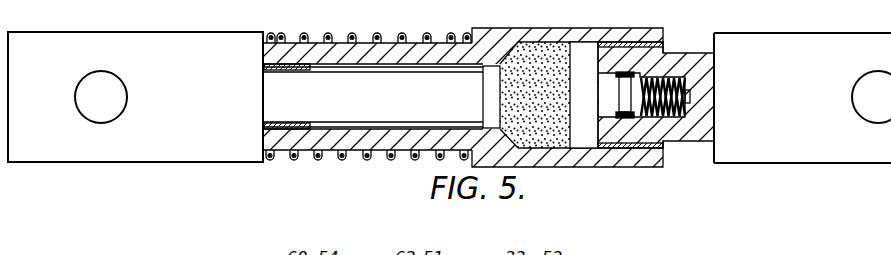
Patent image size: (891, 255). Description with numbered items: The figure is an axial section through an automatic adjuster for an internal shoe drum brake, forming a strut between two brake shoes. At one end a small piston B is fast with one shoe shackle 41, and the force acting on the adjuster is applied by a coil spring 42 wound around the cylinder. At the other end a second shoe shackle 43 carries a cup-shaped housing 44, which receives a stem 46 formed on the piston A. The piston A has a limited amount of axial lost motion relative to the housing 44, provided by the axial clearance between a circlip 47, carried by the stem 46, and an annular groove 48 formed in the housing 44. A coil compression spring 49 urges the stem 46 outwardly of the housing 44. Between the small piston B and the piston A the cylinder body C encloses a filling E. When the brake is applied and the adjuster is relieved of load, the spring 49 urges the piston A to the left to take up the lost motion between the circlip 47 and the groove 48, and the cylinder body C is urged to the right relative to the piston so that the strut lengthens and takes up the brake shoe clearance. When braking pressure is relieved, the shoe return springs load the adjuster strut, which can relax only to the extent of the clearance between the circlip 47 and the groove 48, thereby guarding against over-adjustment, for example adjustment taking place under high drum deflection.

The shoe shackle 41 is at (220, 50).
The coil spring 42 is at (468, 32).
The second shoe shackle 43 is at (773, 48).
The cup-shaped housing 44 is at (673, 60).
The stem 46 is at (607, 85).
The circlip 47 is at (624, 72).
The annular groove 48 is at (628, 118).
The coil compression spring 49 is at (668, 118).
The piston A is at (588, 63).
The small piston B is at (487, 100).
The cylinder body C is at (568, 30).
The granular filling E is at (538, 62).